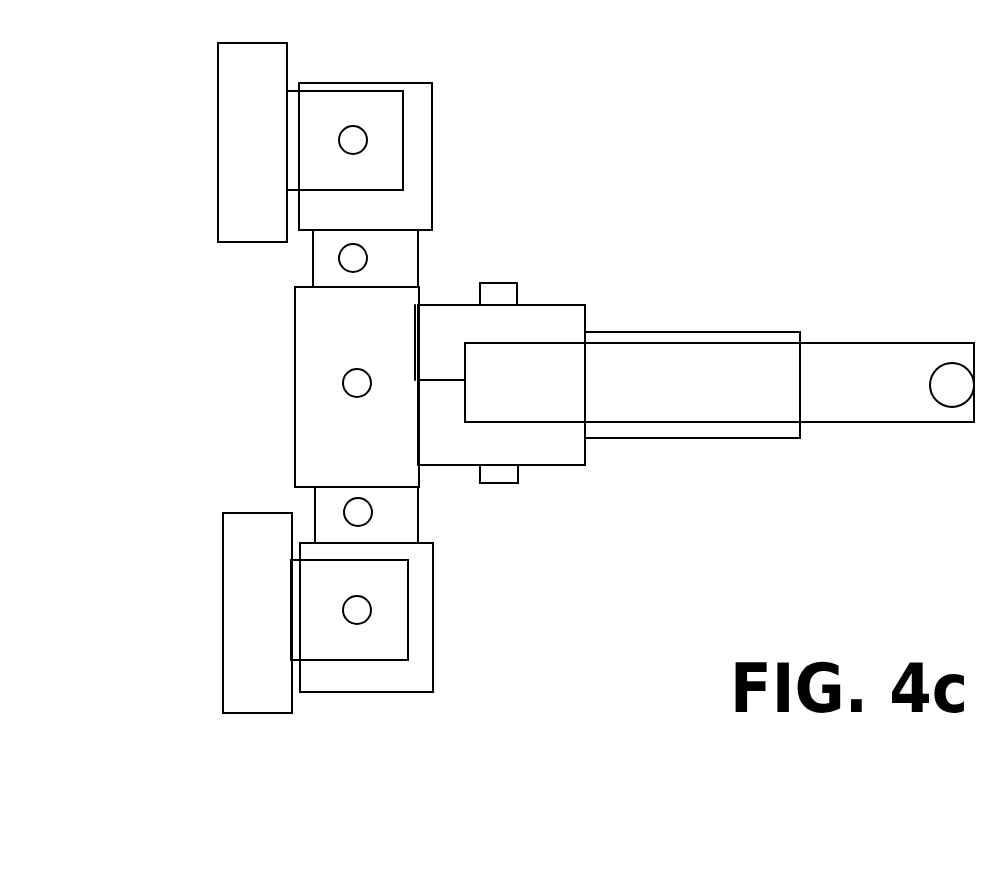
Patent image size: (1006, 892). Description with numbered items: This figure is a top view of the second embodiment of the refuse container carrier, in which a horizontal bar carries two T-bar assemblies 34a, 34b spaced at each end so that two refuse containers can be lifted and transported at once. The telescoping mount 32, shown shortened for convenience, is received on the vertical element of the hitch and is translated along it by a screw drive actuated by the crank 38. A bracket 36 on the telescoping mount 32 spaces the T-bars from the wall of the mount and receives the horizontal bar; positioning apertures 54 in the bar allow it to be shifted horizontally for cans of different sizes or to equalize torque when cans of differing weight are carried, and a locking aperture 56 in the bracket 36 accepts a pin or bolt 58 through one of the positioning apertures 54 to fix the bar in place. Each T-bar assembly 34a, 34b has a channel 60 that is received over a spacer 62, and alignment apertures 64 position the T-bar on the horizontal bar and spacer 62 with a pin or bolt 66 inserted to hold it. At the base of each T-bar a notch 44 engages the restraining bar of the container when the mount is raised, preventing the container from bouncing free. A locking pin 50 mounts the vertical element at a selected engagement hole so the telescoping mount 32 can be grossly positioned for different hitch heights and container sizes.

The telescoping mount 32 is at (548, 322).
The T-bar assembly 34a is at (250, 108).
The T-bar assembly 34b is at (253, 617).
The bracket 36 is at (318, 348).
The crank 38 is at (737, 382).
The notch 44 is at (397, 260).
The locking pin 50 is at (500, 485).
The positioning apertures 54 is at (338, 260).
The locking aperture 56 is at (352, 395).
The pivot pin 58 is at (355, 383).
The channel 60 is at (388, 168).
The spacer 62 is at (409, 212).
The alignment apertures 64 is at (363, 130).
The pin or bolt 66 is at (357, 610).